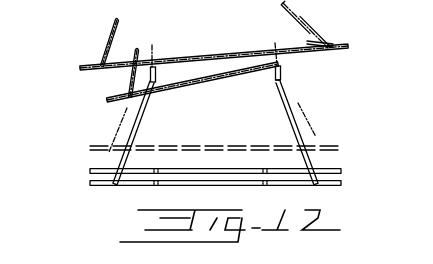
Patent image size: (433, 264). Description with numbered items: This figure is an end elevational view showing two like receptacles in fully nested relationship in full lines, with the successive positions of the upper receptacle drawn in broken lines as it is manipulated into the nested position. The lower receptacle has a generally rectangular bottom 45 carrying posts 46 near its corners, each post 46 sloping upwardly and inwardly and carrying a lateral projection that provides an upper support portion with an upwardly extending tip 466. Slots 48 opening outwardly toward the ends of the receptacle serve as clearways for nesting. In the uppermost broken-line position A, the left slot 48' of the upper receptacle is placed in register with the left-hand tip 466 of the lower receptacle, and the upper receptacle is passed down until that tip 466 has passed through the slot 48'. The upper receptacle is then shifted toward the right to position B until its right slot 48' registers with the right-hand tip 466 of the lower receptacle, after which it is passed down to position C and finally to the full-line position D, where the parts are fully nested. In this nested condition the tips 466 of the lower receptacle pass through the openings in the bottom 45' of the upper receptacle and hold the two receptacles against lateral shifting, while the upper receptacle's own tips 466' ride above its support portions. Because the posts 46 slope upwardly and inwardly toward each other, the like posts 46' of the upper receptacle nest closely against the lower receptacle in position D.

The uppermost position of upper receptacle A is at (80, 65).
The shifted position of upper receptacle B is at (107, 100).
The lowered position of upper receptacle C is at (103, 146).
The fully nested position D is at (90, 170).
The bottom 45 is at (234, 178).
The bottom of upper receptacle 45' is at (249, 167).
The post 46 is at (215, 133).
The post of upper receptacle 46' is at (214, 118).
The upwardly extending tip 466 is at (216, 83).
The upwardly extending tip of upper receptacle 466' is at (307, 74).
The slot 48 is at (142, 193).
The slot of upper receptacle 48' is at (214, 92).